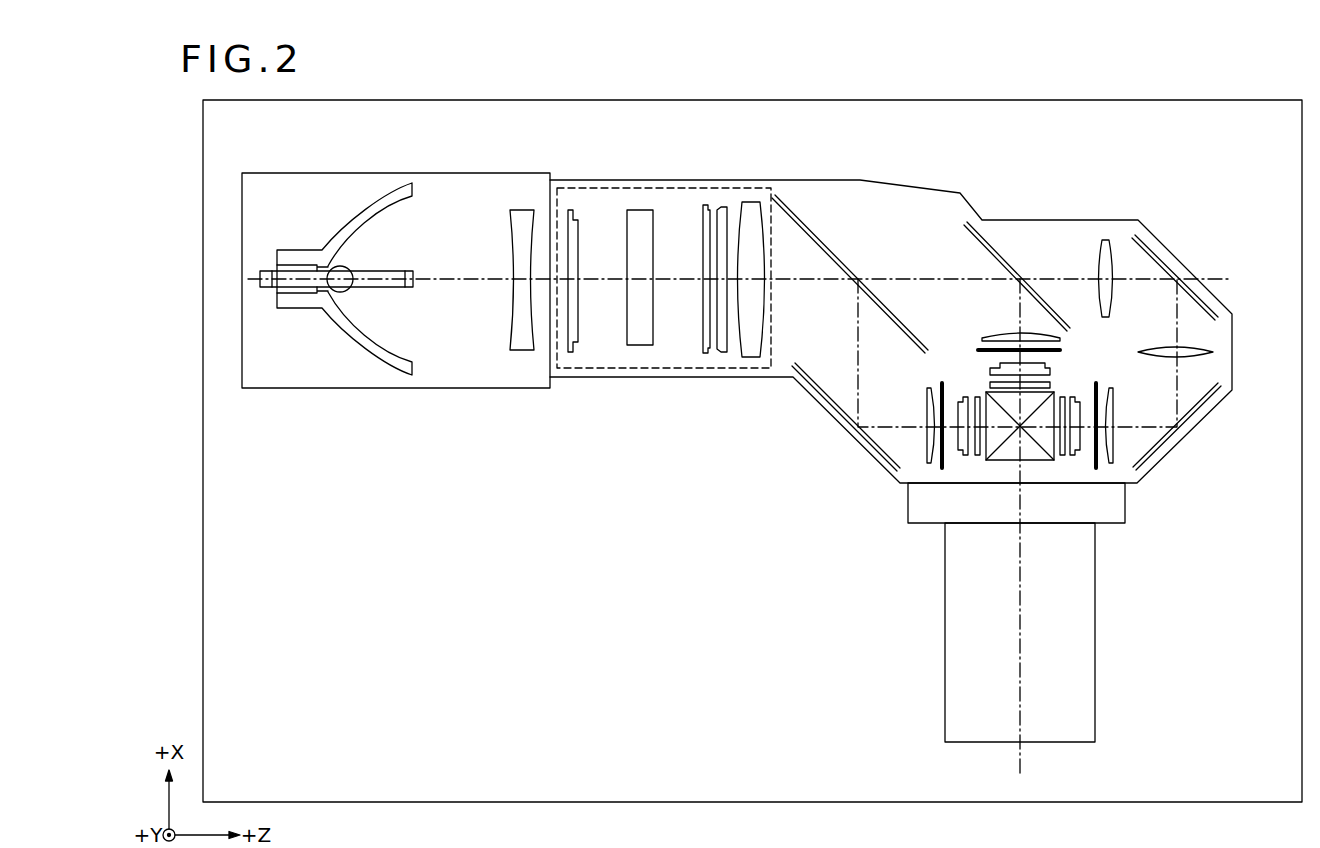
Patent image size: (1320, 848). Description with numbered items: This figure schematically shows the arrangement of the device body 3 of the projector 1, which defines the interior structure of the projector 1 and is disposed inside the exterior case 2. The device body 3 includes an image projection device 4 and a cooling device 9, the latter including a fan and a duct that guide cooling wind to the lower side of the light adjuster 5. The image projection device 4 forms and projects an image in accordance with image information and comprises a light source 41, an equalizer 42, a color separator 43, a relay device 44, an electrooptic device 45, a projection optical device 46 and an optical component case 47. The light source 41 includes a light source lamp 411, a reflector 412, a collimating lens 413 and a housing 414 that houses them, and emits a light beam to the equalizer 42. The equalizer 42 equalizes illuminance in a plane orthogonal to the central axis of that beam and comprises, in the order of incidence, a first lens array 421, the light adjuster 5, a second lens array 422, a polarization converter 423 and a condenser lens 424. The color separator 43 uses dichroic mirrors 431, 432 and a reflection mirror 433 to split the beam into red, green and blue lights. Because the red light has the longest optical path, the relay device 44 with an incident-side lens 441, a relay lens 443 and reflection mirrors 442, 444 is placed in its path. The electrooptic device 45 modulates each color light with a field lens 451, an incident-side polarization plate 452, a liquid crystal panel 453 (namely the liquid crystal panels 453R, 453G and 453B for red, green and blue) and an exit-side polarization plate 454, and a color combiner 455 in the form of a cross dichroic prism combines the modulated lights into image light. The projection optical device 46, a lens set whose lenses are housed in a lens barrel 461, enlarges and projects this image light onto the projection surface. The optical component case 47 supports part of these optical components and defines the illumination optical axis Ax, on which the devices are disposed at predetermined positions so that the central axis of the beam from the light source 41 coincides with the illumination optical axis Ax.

The projector 1 is at (540, 88).
The exterior case 2 is at (858, 100).
The device body 3 is at (437, 633).
The image projection device 4 is at (1180, 187).
The light adjuster 5 is at (637, 346).
The cooling device 9 is at (732, 187).
The light source 41 is at (393, 412).
The light source lamp 411 is at (340, 291).
The reflector 412 is at (368, 353).
The collimating lens 413 is at (525, 353).
The housing 414 is at (445, 173).
The equalizer 42 is at (672, 208).
The first lens array 421 is at (573, 334).
The second lens array 422 is at (701, 333).
The polarization converter 423 is at (725, 343).
The condenser lens 424 is at (750, 349).
The color separator 43 is at (868, 224).
The dichroic mirror 431 is at (815, 233).
The dichroic mirror 432 is at (1000, 255).
The reflection mirror 433 is at (875, 443).
The relay device 44 is at (1080, 240).
The incident-side lens 441 is at (1105, 243).
The reflection mirror 442 is at (1161, 259).
The relay lens 443 is at (1195, 348).
The reflection mirror 444 is at (1162, 444).
The electrooptic device 45 is at (1083, 468).
The field lens 451 is at (1005, 333).
The incident-side polarization plate 452 is at (1058, 350).
The liquid crystal panel 453 is at (1026, 440).
The liquid crystal panel 453G is at (990, 366).
The liquid crystal panel 453B is at (958, 458).
The liquid crystal panel 453R is at (1080, 405).
The exit-side polarization plate 454 is at (1050, 385).
The color combiner 455 is at (990, 396).
The projection optical device 46 is at (1082, 622).
The lens barrel 461 is at (1020, 632).
The optical component case 47 is at (1208, 290).
The illumination optical axis Ax is at (808, 282).